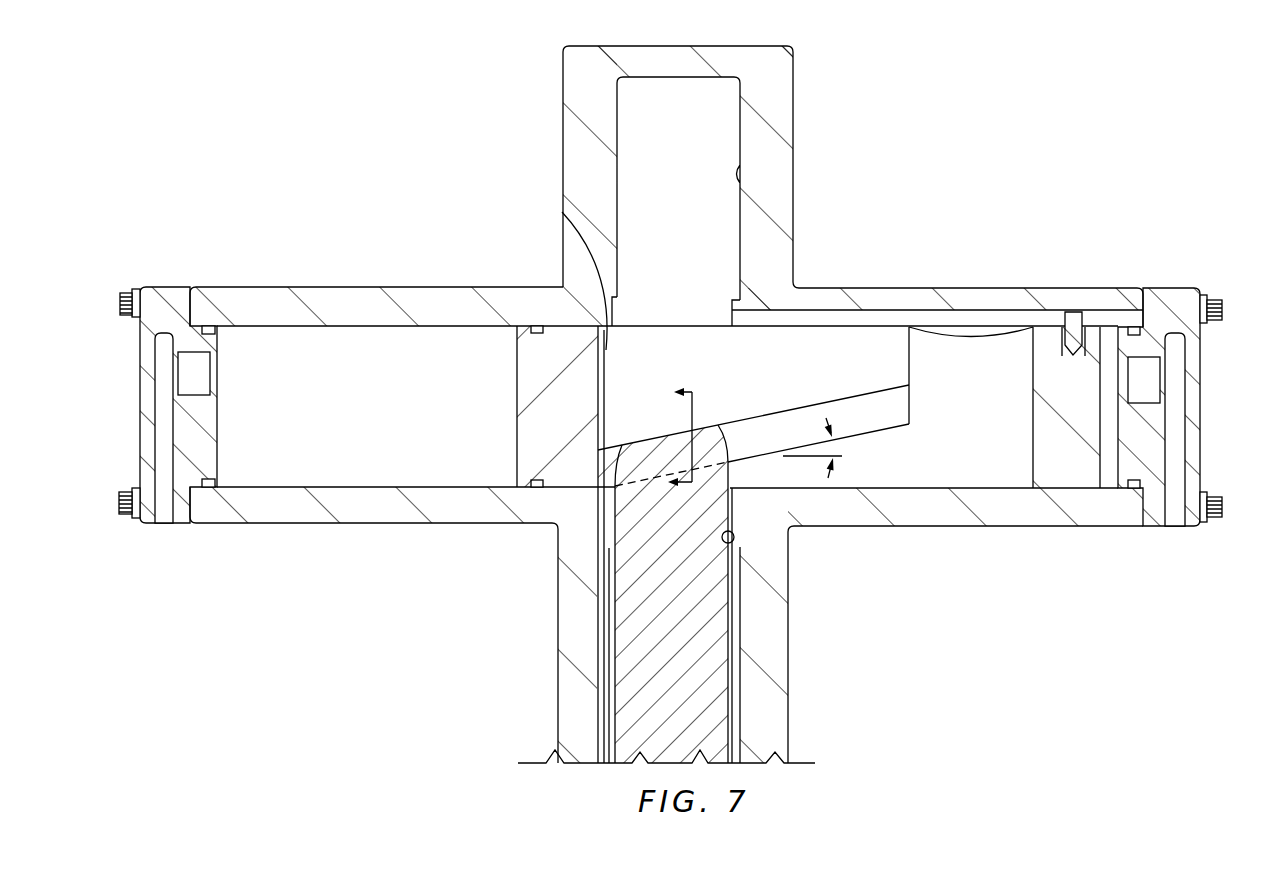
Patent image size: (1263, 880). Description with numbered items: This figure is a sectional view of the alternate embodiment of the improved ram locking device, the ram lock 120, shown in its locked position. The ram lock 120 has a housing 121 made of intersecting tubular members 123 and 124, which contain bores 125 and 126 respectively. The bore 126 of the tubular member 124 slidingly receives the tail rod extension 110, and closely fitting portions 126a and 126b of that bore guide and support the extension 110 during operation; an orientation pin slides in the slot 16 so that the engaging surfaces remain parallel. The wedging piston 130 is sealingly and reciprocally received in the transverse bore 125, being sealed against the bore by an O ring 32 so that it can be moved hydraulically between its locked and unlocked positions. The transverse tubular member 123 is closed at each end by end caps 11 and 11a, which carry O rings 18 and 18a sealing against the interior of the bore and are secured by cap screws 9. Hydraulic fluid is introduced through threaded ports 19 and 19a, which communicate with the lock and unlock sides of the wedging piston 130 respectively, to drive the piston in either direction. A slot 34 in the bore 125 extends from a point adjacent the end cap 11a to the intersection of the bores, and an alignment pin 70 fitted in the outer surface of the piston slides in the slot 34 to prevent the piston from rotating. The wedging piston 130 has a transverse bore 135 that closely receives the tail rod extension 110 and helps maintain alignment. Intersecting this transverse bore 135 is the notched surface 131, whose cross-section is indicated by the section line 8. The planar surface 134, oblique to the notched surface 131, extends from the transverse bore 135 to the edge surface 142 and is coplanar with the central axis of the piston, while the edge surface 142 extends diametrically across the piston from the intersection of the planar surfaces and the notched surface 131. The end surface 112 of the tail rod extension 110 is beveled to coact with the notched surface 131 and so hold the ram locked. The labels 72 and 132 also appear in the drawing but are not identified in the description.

The section line 8- 8 is at (671, 441).
The cap screws 9 is at (122, 292).
The end cap 11 is at (142, 382).
The end cap 11a is at (1245, 392).
The slot 16 is at (600, 652).
The O ring 18 is at (191, 298).
The O ring 18a is at (1134, 489).
The threaded port 19 is at (170, 511).
The threaded port 19a is at (1172, 512).
The O ring 32 is at (537, 488).
The slot 34 is at (884, 317).
The alignment pin 70 is at (1078, 312).
The threaded hole 72 is at (1068, 313).
The tail rod extension 110 is at (724, 643).
The end surface 112 is at (650, 437).
The ram lock 120 is at (341, 540).
The ram lock housing 121 is at (550, 274).
The tubular member 123 is at (478, 514).
The tubular member 124 is at (793, 115).
The transverse bore 125 is at (313, 330).
The bore 126 is at (740, 190).
The closely fitting portion 126a is at (621, 313).
The closely fitting portion 126b is at (734, 542).
The wedging piston 130 is at (517, 352).
The notched surface 131 is at (856, 437).
The arm end face 132 is at (890, 413).
The planar surface 134 is at (780, 337).
The transverse bore 135 is at (1040, 489).
The edge surface 142 is at (566, 242).